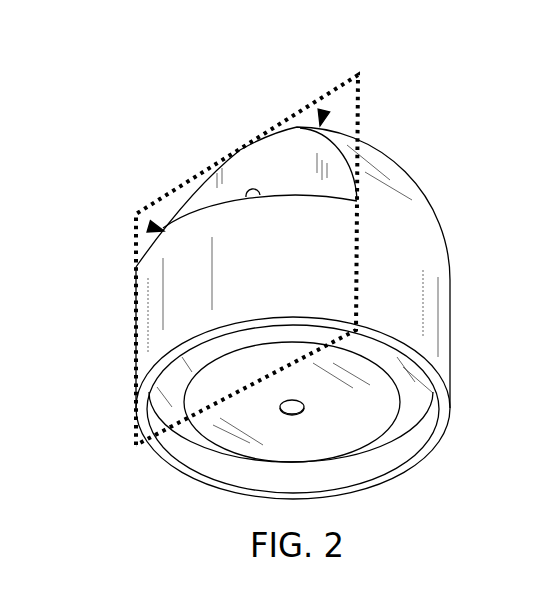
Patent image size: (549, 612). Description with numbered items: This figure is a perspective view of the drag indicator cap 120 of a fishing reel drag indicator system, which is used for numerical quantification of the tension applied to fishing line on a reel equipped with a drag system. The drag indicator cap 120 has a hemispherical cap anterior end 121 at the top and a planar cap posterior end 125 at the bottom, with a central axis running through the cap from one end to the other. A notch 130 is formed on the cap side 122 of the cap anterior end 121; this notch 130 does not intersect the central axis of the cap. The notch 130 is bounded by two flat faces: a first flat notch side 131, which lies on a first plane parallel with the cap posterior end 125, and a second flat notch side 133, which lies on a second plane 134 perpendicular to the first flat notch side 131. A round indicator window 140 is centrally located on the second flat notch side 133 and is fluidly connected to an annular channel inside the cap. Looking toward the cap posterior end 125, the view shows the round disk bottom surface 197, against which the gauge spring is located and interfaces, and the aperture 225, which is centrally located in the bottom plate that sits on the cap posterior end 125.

The drag indicator cap 120 is at (323, 111).
The cap anterior end 121 is at (385, 187).
The cap side 122 is at (153, 312).
The cap posterior end 125 is at (248, 495).
The notch 130 is at (149, 226).
The first flat notch side 131 is at (283, 193).
The second flat notch side 133 is at (240, 182).
The second plane 134 is at (357, 265).
The round indicator window 140 is at (247, 196).
The round disk bottom surface 197 is at (215, 438).
The aperture 225 is at (303, 411).